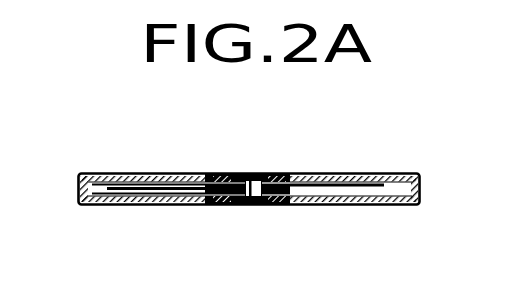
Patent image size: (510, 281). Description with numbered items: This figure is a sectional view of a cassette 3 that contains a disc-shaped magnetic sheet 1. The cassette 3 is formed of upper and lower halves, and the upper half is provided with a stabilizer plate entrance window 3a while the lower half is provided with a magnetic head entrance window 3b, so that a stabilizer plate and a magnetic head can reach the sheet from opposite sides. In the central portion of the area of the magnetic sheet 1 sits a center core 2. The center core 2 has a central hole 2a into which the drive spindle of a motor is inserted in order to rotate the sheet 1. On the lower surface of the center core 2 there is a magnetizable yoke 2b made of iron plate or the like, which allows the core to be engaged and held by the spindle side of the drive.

The magnetic sheet 1 is at (352, 175).
The center core 2 is at (272, 175).
The central hole 2a is at (253, 175).
The magnetizable yoke 2b is at (217, 204).
The cassette 3 is at (407, 204).
The stabilizer plate entrance window 3a is at (156, 174).
The magnetic head entrance window 3b is at (150, 204).